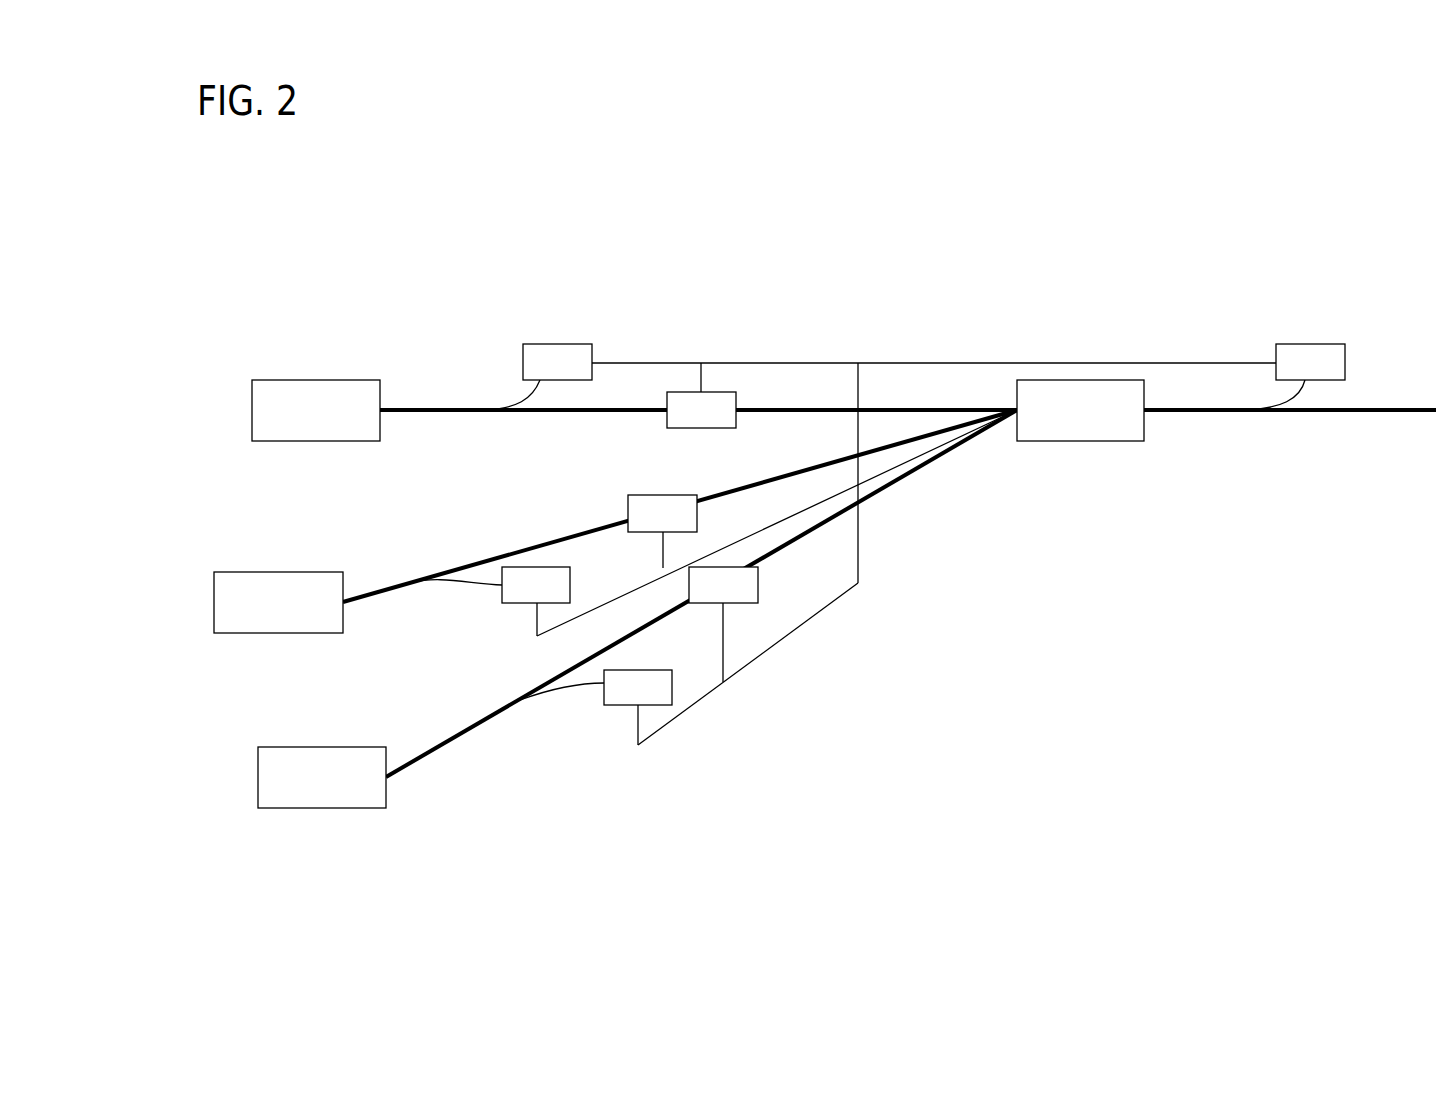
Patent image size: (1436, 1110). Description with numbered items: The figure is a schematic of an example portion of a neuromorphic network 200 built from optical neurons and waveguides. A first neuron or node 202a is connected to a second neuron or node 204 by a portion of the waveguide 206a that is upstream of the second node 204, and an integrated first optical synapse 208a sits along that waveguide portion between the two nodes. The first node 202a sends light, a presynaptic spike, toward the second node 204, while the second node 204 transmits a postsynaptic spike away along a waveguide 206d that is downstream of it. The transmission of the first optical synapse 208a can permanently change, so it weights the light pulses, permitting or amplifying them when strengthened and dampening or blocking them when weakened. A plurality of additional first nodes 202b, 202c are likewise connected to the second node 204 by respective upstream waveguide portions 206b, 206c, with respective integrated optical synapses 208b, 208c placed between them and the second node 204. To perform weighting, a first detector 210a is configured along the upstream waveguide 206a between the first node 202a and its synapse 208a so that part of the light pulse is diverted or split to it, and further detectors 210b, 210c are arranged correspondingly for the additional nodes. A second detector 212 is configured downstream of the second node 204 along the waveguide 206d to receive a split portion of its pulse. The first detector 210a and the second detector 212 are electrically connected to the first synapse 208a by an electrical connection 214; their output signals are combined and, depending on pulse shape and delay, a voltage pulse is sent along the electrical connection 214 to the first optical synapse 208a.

The neuromorphic network 200 is at (1063, 191).
The first neuron or node 202a is at (315, 403).
The additional first node 202b is at (266, 585).
The additional first node 202c is at (297, 782).
The second neuron or node 204 is at (1087, 441).
The portion of the waveguide upstream of the second node 206a is at (907, 407).
The waveguide portion 206b is at (749, 482).
The waveguide portion 206c is at (877, 493).
The waveguide downstream of the second node 206d is at (1207, 412).
The first optical synapse 208a is at (723, 400).
The integrated optical synapse 208b is at (628, 495).
The integrated optical synapse 208c is at (747, 593).
The first detector 210a is at (557, 353).
The detector 210b is at (522, 604).
The detector 210c is at (622, 705).
The second detector 212 is at (1312, 358).
The electrical connection 214 is at (838, 362).